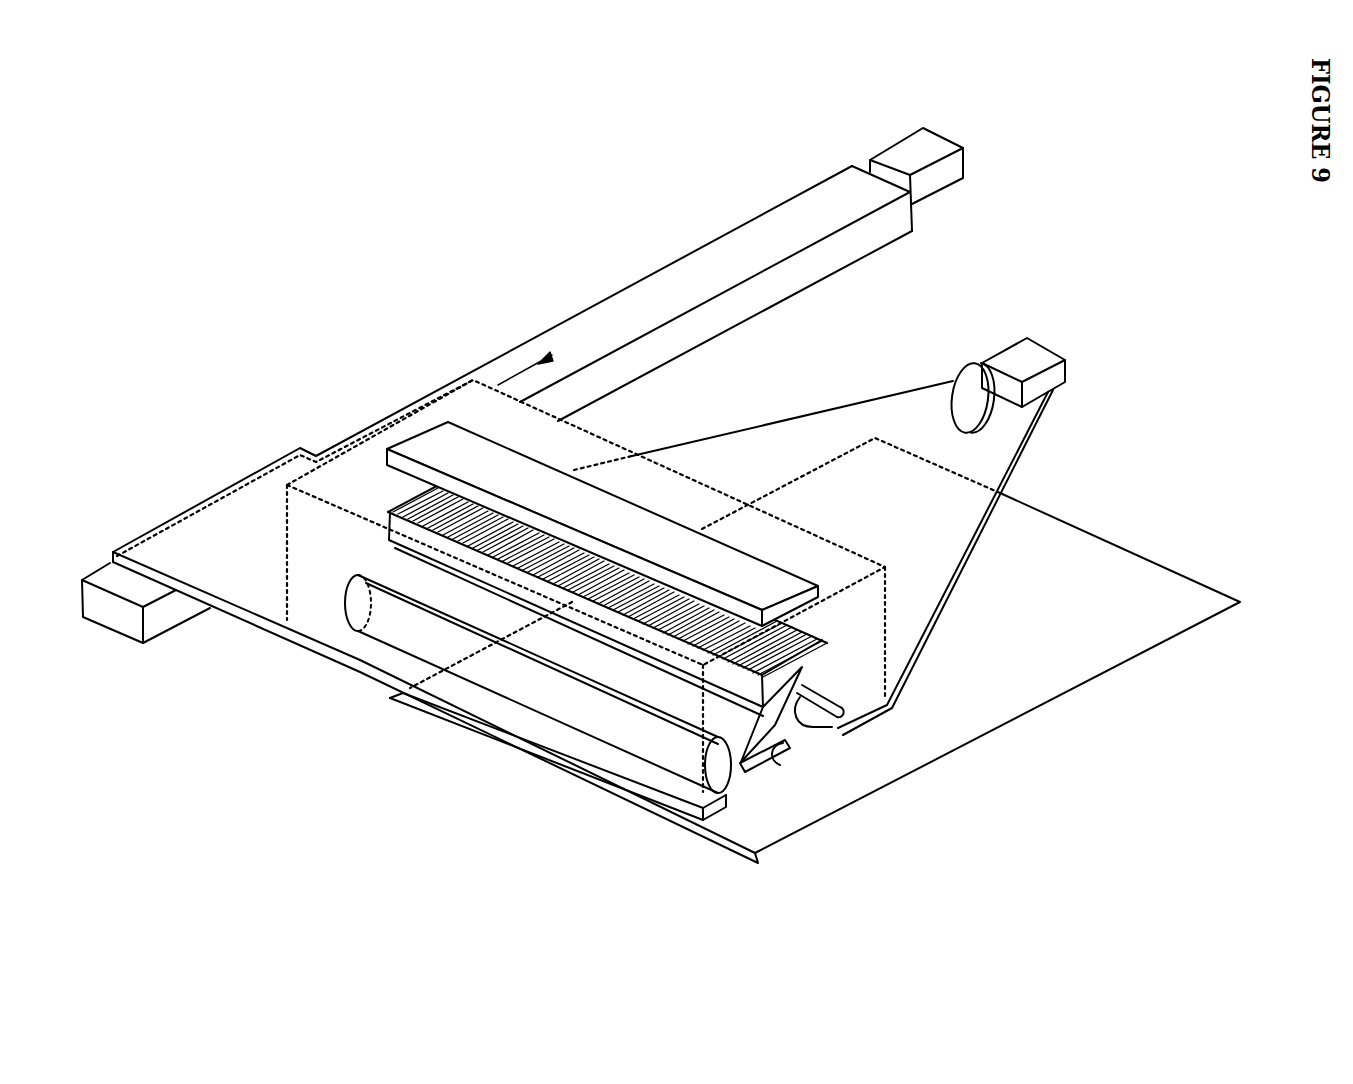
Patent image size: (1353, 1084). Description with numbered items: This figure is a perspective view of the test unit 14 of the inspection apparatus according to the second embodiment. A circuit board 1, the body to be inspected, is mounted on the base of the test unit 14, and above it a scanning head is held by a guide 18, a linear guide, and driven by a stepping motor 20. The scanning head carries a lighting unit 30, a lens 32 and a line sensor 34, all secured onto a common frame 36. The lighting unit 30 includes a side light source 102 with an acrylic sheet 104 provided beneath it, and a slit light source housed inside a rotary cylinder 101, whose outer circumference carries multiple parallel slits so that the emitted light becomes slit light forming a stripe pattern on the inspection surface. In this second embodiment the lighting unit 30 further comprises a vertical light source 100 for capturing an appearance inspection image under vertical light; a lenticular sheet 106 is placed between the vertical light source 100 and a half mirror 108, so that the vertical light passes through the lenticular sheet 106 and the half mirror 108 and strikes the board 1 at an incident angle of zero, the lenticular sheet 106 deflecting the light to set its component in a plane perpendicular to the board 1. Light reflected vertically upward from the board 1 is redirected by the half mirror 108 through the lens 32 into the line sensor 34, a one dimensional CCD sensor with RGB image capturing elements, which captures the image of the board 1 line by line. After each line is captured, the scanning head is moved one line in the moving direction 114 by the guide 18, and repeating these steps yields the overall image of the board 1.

The circuit board 1 is at (1175, 586).
The test unit 14 is at (733, 951).
The guide 18 is at (730, 228).
The stepping motor 20 is at (947, 133).
The lighting unit 30 is at (602, 438).
The lens 32 is at (963, 368).
The line sensor 34 is at (1043, 346).
The common frame 36 is at (1009, 428).
The vertical light source 100 is at (640, 513).
The rotary cylinder 101 is at (685, 763).
The side light source 102 is at (880, 717).
The acrylic sheet 104 is at (853, 735).
The lenticular sheet 106 is at (813, 640).
The half mirror 108 is at (833, 717).
The moving direction 114 is at (552, 355).